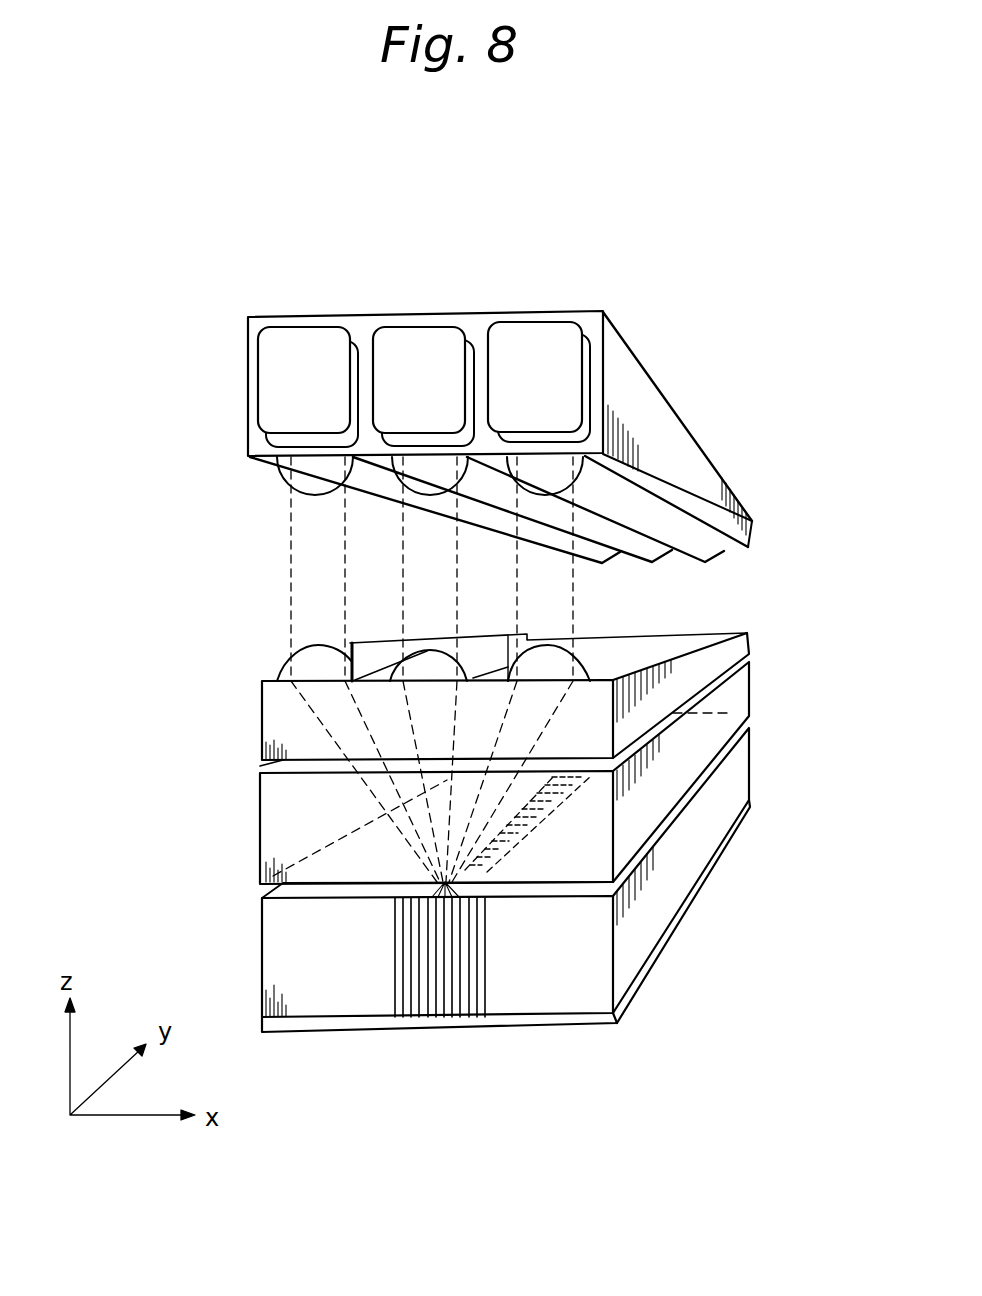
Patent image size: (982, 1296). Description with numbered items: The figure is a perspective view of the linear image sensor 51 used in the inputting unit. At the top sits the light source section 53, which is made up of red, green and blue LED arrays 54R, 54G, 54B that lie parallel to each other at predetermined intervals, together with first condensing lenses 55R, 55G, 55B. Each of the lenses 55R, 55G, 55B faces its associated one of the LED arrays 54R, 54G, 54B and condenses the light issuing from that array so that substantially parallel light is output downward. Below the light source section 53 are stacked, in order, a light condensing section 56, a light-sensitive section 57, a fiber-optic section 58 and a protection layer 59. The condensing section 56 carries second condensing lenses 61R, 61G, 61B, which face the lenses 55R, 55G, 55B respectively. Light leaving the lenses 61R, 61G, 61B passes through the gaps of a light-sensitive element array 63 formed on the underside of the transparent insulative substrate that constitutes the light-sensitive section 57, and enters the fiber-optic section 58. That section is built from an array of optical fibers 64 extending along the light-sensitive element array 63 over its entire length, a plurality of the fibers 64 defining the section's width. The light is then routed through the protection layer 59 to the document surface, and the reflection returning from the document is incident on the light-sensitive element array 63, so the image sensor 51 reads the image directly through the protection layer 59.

The linear image sensor 51 is at (665, 319).
The light source section 53 is at (680, 443).
The R LED array 54R is at (300, 345).
The G LED array 54G is at (415, 346).
The B LED array 54B is at (530, 344).
The first condensing lens 55R is at (367, 485).
The first condensing lens 55G is at (480, 485).
The first condensing lens 55B is at (707, 542).
The light condensing section 56 is at (735, 650).
The light-sensitive section 57 is at (737, 698).
The fiber-optic section 58 is at (740, 779).
The protection layer 59 is at (682, 920).
The second condensing lens 61R is at (327, 659).
The second condensing lens 61G is at (445, 660).
The second condensing lens 61B is at (637, 655).
The light-sensitive element array 63 is at (538, 812).
The optical fibers 64 is at (483, 983).